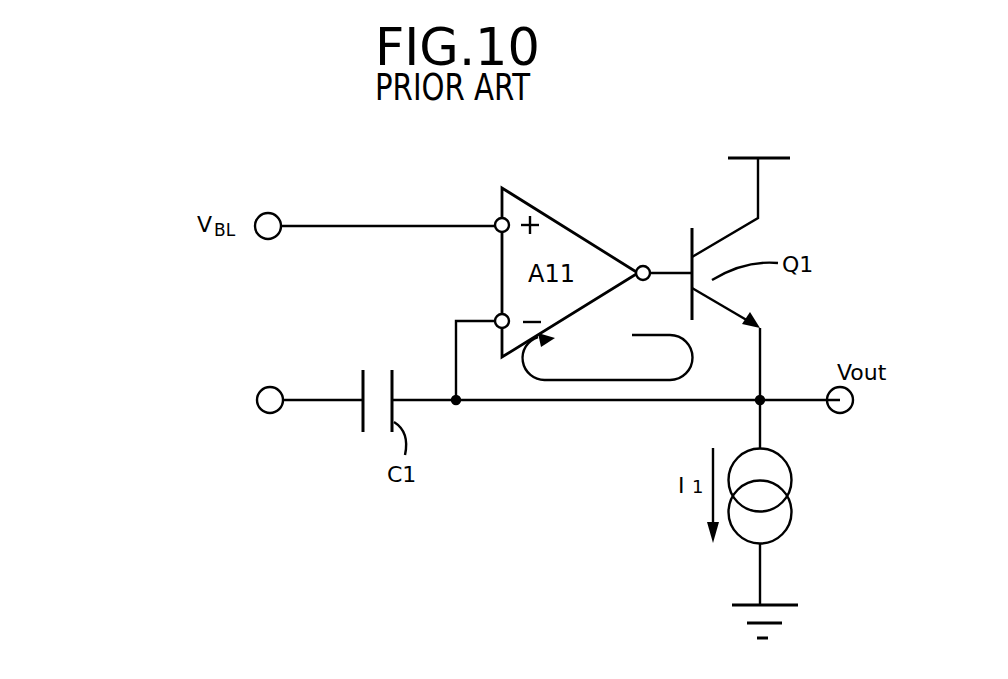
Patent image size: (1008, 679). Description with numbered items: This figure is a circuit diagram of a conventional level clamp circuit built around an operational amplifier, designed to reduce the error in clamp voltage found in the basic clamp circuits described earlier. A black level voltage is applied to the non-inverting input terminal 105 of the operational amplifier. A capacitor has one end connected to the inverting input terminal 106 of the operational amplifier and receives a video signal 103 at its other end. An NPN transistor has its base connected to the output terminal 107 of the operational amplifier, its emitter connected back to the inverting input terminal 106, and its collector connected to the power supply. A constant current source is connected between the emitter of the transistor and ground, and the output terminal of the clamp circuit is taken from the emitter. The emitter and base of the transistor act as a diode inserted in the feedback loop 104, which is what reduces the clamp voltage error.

The video signal 103 is at (221, 404).
The feedback loop 104 is at (608, 351).
The non-inverting input terminal 105 is at (497, 220).
The inverting input terminal 106 is at (497, 316).
The output terminal 107 is at (643, 265).